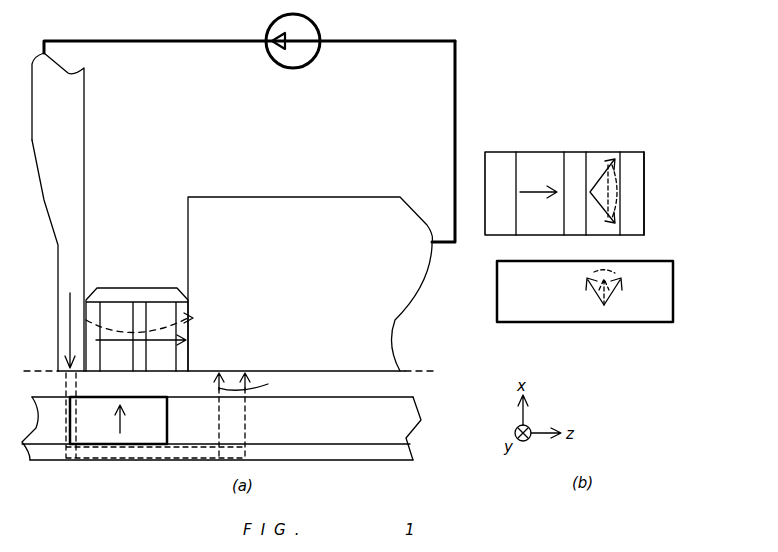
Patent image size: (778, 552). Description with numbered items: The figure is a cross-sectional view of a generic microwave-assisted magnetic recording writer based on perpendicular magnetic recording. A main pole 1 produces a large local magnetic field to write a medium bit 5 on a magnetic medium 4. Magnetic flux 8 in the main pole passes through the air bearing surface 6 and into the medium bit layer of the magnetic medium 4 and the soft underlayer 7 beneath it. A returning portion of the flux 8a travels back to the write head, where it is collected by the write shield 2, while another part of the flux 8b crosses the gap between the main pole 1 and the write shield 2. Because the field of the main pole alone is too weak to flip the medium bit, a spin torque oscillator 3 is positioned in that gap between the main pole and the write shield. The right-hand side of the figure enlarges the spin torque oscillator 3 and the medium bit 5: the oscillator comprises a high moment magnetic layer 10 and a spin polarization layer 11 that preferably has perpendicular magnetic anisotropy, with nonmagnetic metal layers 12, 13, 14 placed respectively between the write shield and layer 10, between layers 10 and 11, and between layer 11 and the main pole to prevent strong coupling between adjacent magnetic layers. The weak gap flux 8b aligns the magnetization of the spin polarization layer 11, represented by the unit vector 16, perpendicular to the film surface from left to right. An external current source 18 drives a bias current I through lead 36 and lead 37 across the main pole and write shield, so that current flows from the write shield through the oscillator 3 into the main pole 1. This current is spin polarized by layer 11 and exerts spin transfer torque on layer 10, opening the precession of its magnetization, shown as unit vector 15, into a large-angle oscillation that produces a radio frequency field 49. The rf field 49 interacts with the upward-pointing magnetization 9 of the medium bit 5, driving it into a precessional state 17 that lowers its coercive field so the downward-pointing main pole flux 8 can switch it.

The main pole 1 is at (50, 200).
The write shield 2 is at (386, 308).
The spin torque oscillator 3 is at (138, 275).
The magnetic medium 4 is at (418, 420).
The medium bit 5 is at (143, 433).
The air bearing surface 6 is at (230, 355).
The soft underlayer 7 is at (410, 452).
The magnetic flux 8 is at (66, 317).
The returning flux portion 8a is at (247, 392).
The gap flux portion 8b is at (186, 316).
The medium bit magnetization 9 is at (112, 422).
The high moment magnetic layer 10 is at (606, 152).
The spin polarization layer 11 is at (540, 152).
The nonmagnetic layer 12 is at (632, 152).
The nonmagnetic layer 13 is at (576, 152).
The nonmagnetic layer 14 is at (502, 152).
The magnetization unit vector of layer 10 15 is at (612, 221).
The magnetization unit vector of layer 11 16 is at (536, 194).
The precessional state 17 is at (622, 282).
The current source 18 is at (319, 23).
The lead 36 is at (192, 41).
The lead 37 is at (457, 57).
The rf field 49 is at (603, 250).